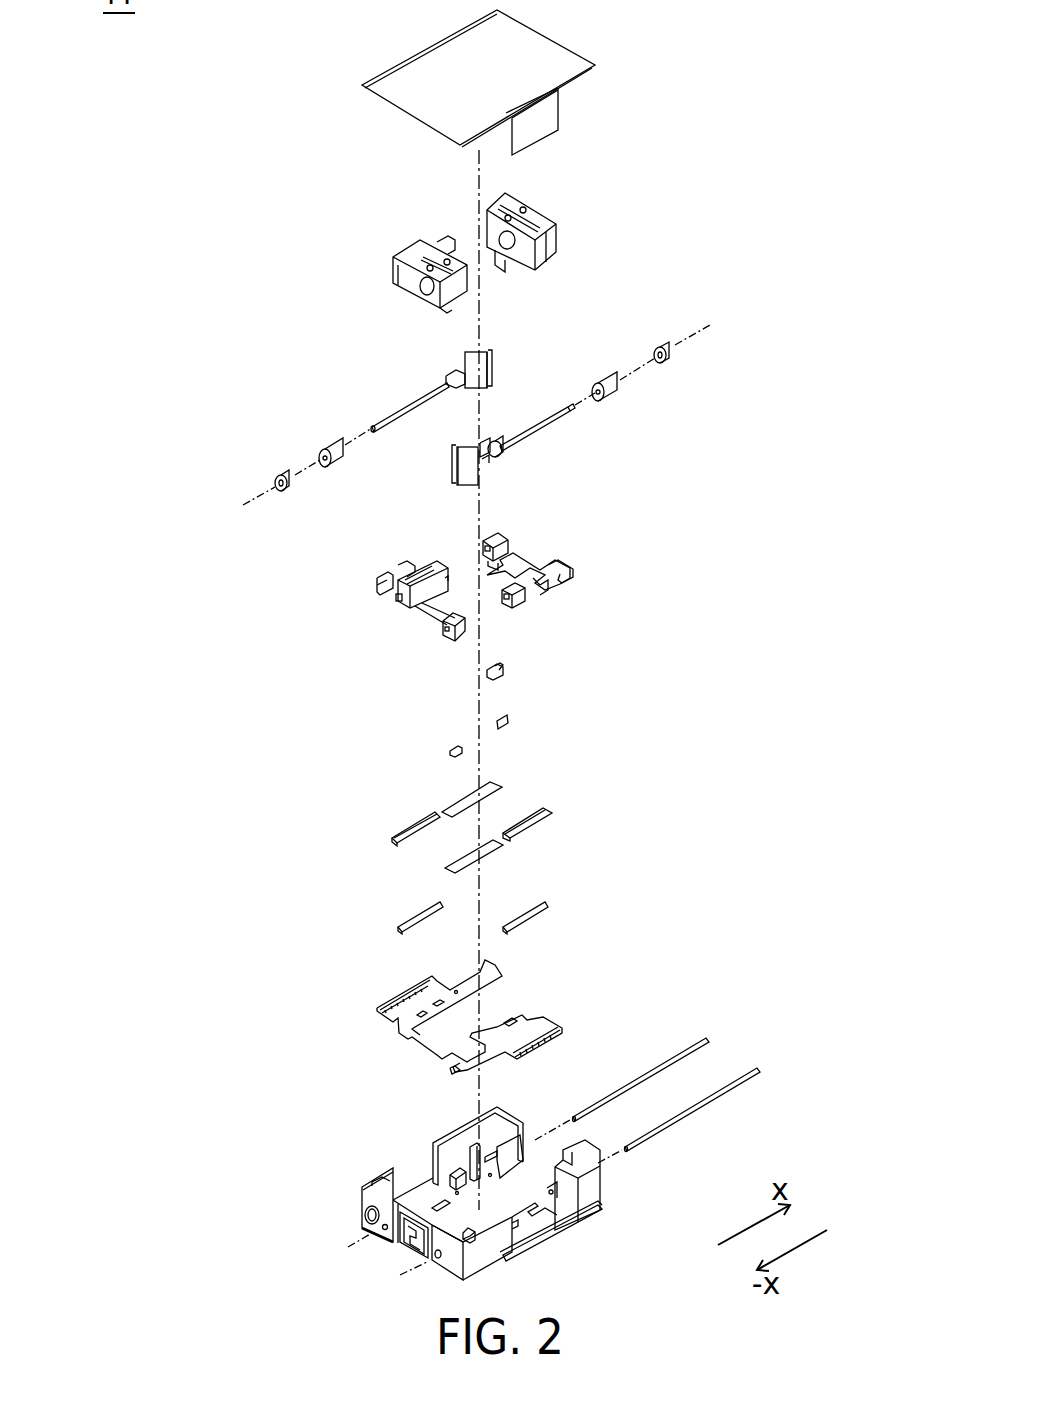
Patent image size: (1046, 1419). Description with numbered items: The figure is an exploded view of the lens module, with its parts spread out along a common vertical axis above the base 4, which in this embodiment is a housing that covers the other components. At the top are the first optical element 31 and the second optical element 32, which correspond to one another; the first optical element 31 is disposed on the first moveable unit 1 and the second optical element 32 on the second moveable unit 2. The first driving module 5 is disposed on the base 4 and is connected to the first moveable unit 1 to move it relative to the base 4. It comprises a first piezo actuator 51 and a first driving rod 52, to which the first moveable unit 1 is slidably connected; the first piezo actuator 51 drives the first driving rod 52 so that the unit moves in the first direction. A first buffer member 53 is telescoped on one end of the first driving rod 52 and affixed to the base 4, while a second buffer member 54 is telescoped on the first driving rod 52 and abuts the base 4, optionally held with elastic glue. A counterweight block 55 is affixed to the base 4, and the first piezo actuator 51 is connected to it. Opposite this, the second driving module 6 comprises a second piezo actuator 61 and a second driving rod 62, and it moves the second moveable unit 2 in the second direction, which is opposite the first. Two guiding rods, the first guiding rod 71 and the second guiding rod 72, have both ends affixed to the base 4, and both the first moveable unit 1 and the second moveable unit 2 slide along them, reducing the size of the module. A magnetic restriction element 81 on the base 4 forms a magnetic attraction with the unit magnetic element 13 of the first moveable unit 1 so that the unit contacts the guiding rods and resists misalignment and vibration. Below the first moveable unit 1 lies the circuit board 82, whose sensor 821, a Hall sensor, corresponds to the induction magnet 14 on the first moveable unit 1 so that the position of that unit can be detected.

The first moveable unit 1 is at (548, 582).
The second moveable unit 2 is at (398, 603).
The base 4 is at (575, 1202).
The first driving module 5 is at (560, 428).
The second driving module 6 is at (367, 413).
The unit magnetic element 13 is at (503, 673).
The induction magnet 14 is at (542, 915).
The first optical element 31 is at (547, 222).
The second optical element 32 is at (410, 252).
The first piezo actuator 51 is at (489, 462).
The first driving rod 52 is at (565, 412).
The first buffer member 53 is at (668, 356).
The second buffer member 54 is at (503, 452).
The counterweight block 55 is at (458, 470).
The second piezo actuator 61 is at (463, 372).
The second driving rod 62 is at (437, 407).
The first guiding rod 71 is at (717, 1097).
The second guiding rod 72 is at (670, 1057).
The magnetic restriction element 81 is at (490, 850).
The circuit board 82 is at (474, 1028).
The sensor 821 is at (512, 1018).